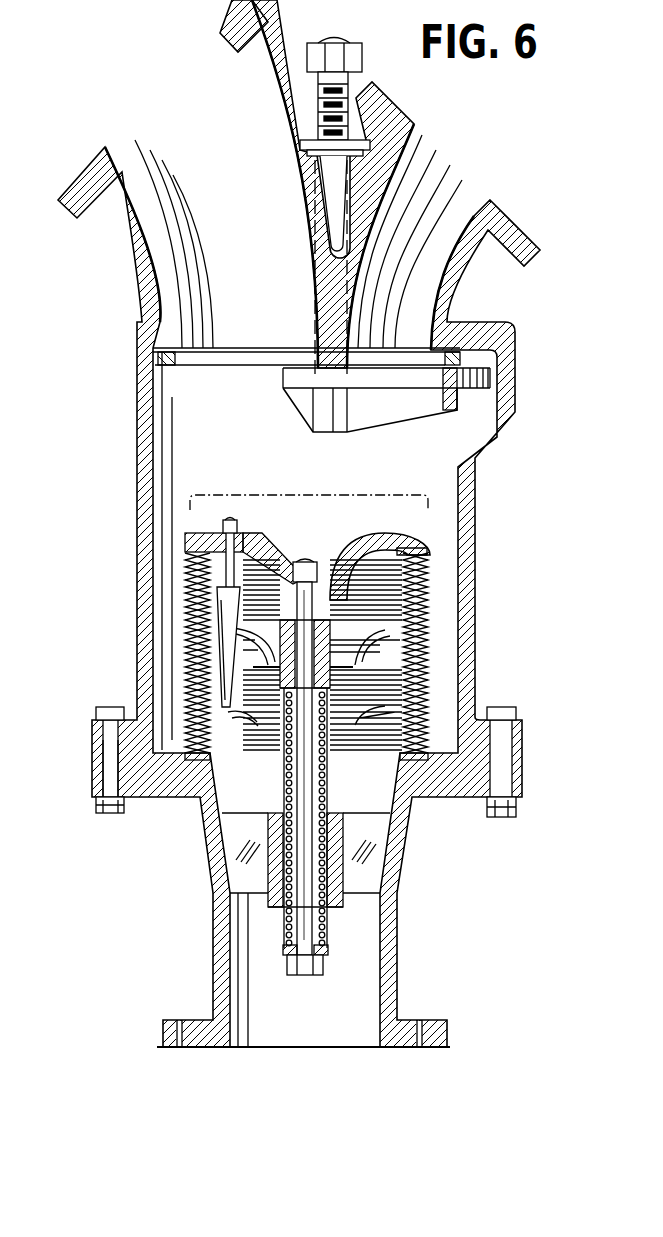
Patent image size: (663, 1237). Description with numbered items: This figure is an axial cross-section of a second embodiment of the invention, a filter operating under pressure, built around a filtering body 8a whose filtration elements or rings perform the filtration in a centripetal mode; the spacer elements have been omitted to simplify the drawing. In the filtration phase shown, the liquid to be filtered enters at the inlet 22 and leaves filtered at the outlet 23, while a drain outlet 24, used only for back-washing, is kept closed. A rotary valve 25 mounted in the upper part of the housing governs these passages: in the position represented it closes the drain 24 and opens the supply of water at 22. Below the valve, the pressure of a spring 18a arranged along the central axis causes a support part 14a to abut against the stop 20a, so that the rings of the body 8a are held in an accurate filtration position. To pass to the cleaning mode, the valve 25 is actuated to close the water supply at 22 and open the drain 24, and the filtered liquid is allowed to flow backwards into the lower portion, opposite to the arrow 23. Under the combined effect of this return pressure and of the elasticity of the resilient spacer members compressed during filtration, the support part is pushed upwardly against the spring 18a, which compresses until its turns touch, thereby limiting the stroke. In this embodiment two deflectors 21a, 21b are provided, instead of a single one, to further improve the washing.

The inlet for liquid to be filtered 22 is at (183, 120).
The drain outlet 24 is at (495, 128).
The rotary valve 25 is at (386, 400).
The support part 14a is at (363, 540).
The filtering body 8a is at (410, 580).
The stop 20a is at (403, 618).
The deflector 21b is at (403, 643).
The deflector 21a is at (403, 693).
The spring 18a is at (326, 789).
The filtered liquid outlet 23 is at (303, 1147).